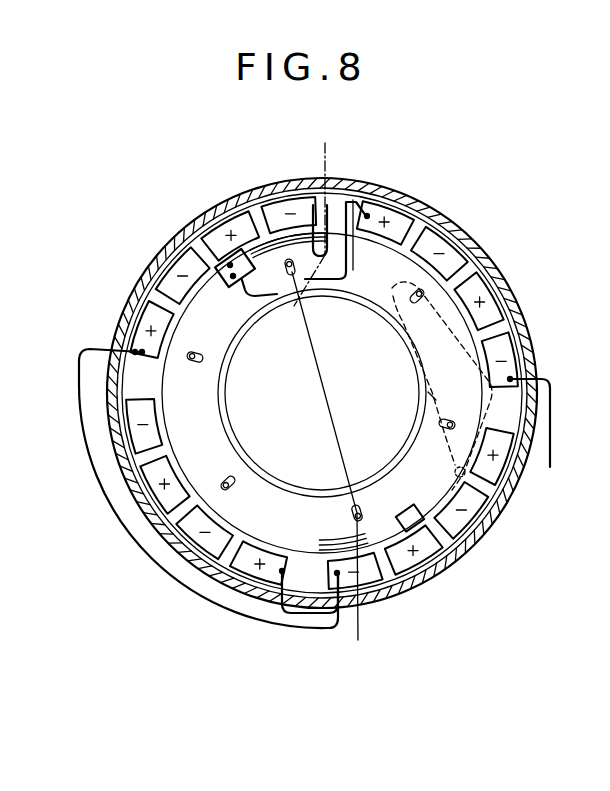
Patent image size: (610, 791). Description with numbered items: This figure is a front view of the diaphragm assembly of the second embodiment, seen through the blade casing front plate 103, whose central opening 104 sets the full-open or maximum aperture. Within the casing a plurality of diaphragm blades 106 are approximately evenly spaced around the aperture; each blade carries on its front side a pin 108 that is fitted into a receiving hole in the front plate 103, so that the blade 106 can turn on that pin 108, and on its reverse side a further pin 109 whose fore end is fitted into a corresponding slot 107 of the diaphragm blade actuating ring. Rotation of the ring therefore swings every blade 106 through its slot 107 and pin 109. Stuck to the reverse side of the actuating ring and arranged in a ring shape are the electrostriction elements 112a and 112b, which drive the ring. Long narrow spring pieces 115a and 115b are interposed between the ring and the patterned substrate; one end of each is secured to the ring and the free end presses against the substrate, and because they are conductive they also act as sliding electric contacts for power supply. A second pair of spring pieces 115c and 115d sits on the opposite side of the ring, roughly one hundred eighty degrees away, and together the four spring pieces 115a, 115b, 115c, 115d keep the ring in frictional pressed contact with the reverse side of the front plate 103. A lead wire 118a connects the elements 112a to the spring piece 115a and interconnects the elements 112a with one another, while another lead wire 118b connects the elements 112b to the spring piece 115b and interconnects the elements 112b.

The blade casing front plate 103 is at (128, 333).
The opening 104 is at (245, 425).
The diaphragm blade 106 is at (400, 344).
The slot 107 is at (428, 392).
The pin 108 is at (438, 500).
The pin 109 is at (438, 428).
The electrostriction element 112a is at (128, 335).
The electrostriction element 112b is at (522, 335).
The spring piece 115a is at (320, 255).
The spring piece 115b is at (346, 200).
The spring piece 115c is at (318, 548).
The spring piece 115d is at (350, 540).
The lead wire 118a is at (183, 329).
The lead wire 118b is at (277, 296).